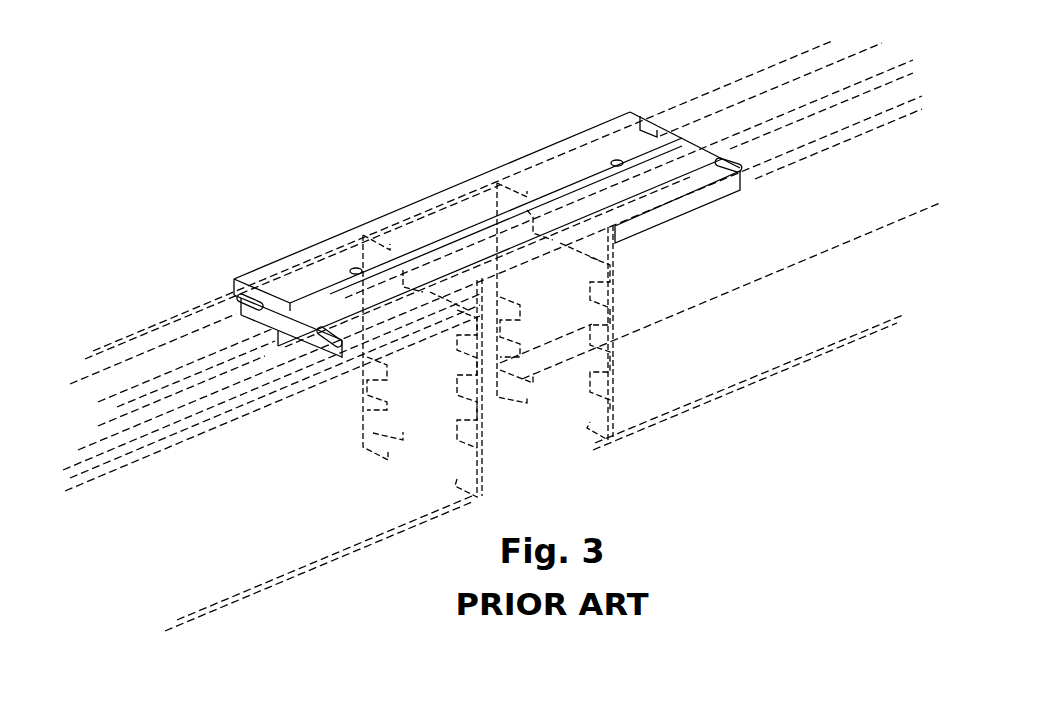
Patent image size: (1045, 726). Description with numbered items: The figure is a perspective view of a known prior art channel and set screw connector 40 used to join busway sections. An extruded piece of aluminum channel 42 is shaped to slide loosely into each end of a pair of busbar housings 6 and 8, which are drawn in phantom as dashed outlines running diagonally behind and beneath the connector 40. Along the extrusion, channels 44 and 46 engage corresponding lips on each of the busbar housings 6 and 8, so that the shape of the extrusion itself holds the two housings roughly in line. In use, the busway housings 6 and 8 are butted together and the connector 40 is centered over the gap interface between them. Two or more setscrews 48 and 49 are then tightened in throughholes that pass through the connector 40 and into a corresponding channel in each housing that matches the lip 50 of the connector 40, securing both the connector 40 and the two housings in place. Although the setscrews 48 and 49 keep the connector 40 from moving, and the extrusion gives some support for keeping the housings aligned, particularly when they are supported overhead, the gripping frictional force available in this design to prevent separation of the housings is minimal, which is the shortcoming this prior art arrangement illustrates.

The busbar housing 6 is at (137, 331).
The busbar housing 8 is at (738, 78).
The channel and set screw connector 40 is at (268, 184).
The aluminum channel 42 is at (747, 170).
The channel 44 is at (234, 298).
The channel 46 is at (330, 340).
The setscrew 48 is at (356, 268).
The setscrew 49 is at (616, 160).
The lip 50 is at (248, 348).